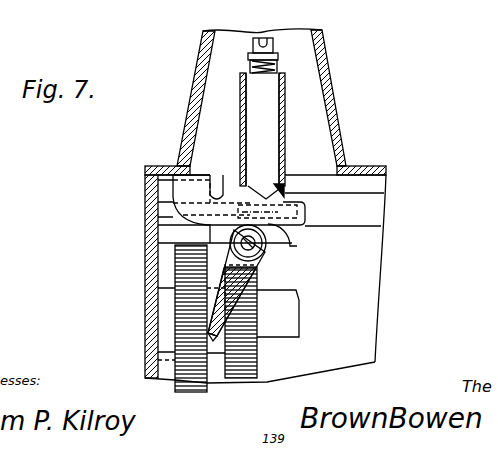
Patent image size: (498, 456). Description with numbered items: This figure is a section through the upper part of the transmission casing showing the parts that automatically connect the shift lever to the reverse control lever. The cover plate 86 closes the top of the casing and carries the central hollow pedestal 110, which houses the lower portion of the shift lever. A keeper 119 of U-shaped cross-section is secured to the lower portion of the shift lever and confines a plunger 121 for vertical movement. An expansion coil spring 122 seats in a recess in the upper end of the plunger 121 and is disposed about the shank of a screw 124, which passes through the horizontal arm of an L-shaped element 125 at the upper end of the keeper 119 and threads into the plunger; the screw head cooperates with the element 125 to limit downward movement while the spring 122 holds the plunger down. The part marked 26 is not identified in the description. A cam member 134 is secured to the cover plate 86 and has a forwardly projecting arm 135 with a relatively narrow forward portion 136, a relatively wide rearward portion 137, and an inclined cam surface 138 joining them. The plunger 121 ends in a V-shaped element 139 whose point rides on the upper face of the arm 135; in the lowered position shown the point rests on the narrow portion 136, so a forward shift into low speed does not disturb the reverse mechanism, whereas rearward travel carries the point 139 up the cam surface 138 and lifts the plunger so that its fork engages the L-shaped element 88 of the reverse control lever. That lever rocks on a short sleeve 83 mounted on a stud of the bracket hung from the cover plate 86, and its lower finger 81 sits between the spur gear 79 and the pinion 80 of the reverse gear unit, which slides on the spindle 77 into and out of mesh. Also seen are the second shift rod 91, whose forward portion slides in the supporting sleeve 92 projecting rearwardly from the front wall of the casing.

The plunger stem 26 is at (265, 40).
The L-shaped element 125 is at (250, 64).
The expansion coil spring 122 is at (277, 64).
The screw 124 is at (264, 73).
The hollow pedestal 110 is at (330, 72).
The plunger 121 is at (272, 123).
The keeper 119 is at (283, 147).
The cover plate 86 is at (372, 165).
The wide rearward portion 137 is at (222, 193).
The V-shaped element 139 is at (266, 198).
The cam member 134 is at (150, 190).
The cam surface 138 is at (211, 197).
The narrow forward portion 136 is at (285, 203).
The forwardly projecting arm 135 is at (304, 221).
The second shift rod 91 is at (383, 212).
The supporting sleeve 92 is at (170, 232).
The short sleeve 83 is at (272, 250).
The L-shaped element 88 is at (245, 273).
The spindle 77 is at (282, 310).
The pinion 80 is at (258, 357).
The finger 81 is at (219, 340).
The spur gear 79 is at (195, 392).